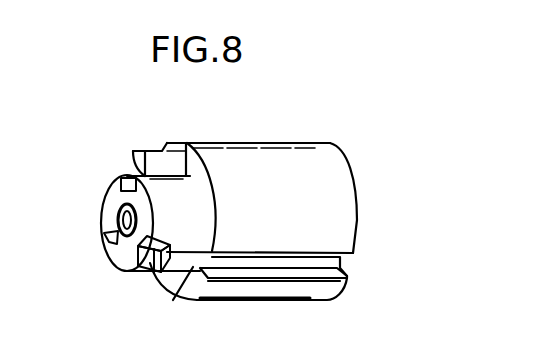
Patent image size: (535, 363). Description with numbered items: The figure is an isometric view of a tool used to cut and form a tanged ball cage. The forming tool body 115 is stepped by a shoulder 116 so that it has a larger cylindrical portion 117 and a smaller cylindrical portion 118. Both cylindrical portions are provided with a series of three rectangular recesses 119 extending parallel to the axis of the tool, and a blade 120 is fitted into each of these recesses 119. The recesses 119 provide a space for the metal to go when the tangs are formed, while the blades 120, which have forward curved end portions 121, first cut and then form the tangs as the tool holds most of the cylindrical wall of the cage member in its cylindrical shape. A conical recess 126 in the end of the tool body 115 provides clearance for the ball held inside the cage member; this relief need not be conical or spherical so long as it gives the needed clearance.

The forming tool body 115 is at (281, 125).
The shoulder 116 is at (207, 197).
The larger cylindrical portion 117 is at (305, 224).
The smaller cylindrical portion 118 is at (193, 235).
The rectangular recesses 119 is at (121, 177).
The blades 120 is at (159, 127).
The forward curved end portions 121 is at (131, 158).
The conical recess 126 is at (117, 223).